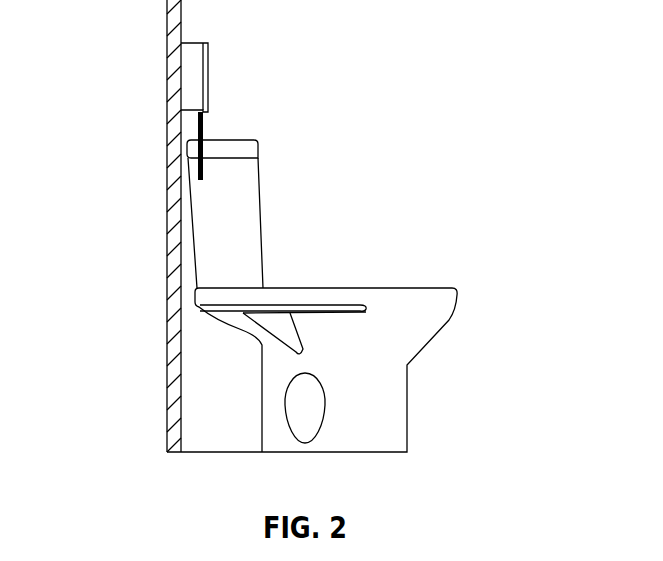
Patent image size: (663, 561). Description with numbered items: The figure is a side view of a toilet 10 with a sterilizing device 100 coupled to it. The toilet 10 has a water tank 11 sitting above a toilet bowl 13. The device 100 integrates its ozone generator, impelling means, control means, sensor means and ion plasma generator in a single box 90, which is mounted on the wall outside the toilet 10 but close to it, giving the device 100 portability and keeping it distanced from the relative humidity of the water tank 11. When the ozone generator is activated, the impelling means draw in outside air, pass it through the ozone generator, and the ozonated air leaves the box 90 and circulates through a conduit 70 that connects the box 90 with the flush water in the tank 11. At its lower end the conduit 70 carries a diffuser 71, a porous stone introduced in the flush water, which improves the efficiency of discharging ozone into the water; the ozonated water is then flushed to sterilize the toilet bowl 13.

The sterilizing device 100 is at (238, 64).
The box 90 is at (197, 55).
The conduit 70 is at (198, 128).
The diffuser 71 is at (200, 180).
The toilet 10 is at (288, 228).
The water tank 11 is at (242, 177).
The toilet bowl 13 is at (400, 312).